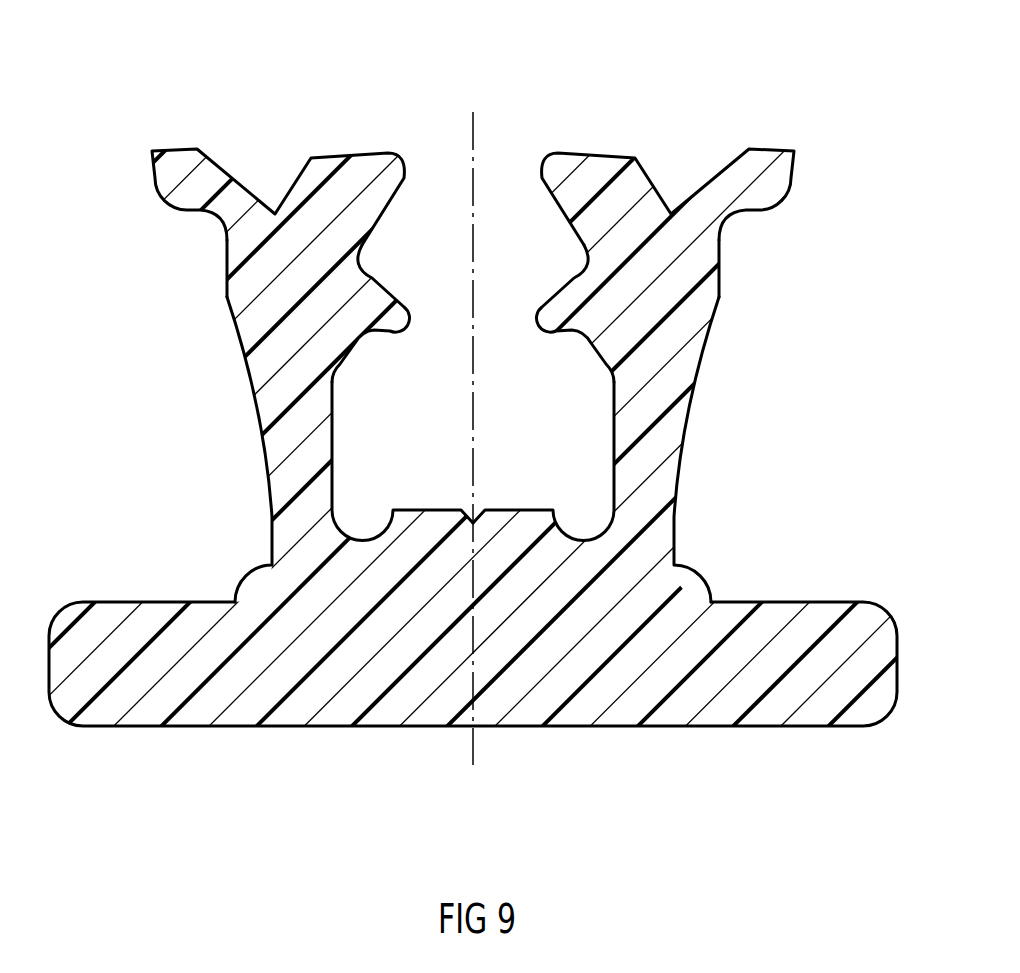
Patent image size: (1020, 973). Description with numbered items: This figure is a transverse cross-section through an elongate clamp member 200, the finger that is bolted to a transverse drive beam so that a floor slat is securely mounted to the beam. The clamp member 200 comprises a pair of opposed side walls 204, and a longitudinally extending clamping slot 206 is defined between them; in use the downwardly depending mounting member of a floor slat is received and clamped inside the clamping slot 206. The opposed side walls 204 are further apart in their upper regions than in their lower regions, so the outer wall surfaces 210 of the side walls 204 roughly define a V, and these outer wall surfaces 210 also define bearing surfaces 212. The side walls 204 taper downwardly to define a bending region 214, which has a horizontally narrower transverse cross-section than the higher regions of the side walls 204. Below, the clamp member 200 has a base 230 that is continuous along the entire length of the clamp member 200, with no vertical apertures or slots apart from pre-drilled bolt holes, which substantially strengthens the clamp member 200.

The clamp member 200 is at (510, 413).
The side walls 204 is at (262, 397).
The clamping slot 206 is at (507, 181).
The outer wall surfaces 210 is at (268, 493).
The bearing surfaces 212 is at (228, 270).
The bending region 214 is at (315, 494).
The base 230 is at (547, 726).